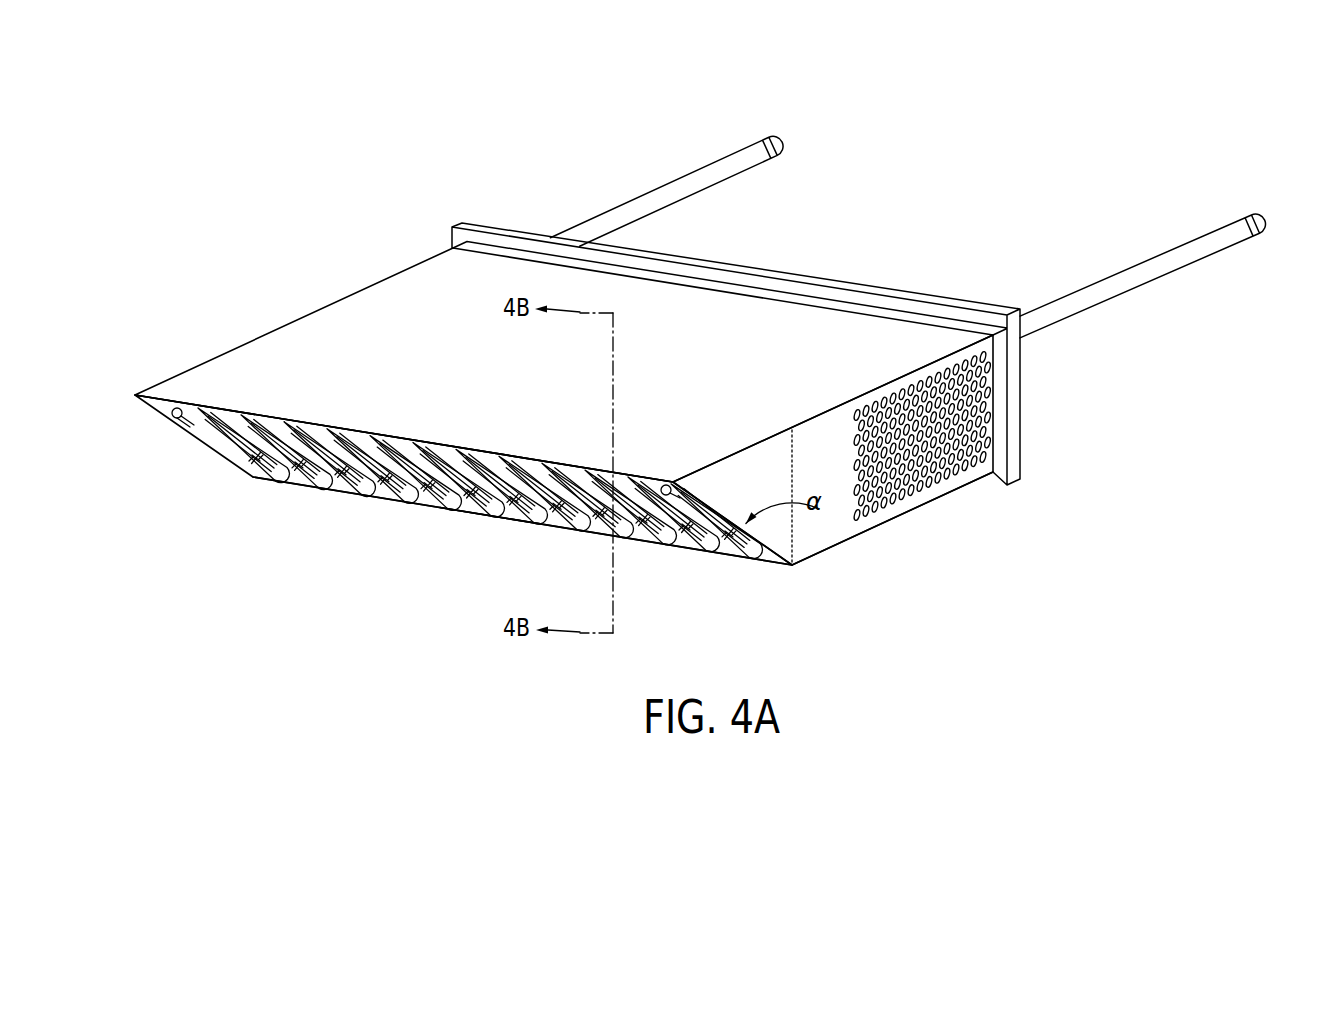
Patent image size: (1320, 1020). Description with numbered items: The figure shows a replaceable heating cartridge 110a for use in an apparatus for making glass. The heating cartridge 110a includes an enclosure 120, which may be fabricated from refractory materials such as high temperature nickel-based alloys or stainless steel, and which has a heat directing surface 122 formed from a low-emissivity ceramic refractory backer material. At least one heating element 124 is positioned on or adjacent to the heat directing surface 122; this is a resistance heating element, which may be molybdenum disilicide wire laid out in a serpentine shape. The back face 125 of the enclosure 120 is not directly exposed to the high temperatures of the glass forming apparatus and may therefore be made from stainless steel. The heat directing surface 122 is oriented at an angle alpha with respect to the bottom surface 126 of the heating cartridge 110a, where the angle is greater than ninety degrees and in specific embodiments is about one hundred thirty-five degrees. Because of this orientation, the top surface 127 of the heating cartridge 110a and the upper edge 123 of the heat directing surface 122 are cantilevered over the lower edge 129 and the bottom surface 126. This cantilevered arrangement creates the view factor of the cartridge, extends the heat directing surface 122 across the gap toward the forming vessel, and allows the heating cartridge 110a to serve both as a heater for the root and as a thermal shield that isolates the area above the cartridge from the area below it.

The heating cartridge 110a is at (322, 594).
The enclosure 120 is at (934, 540).
The heat directing surface 122 is at (281, 487).
The upper edge 123 is at (234, 404).
The heating element 124 is at (487, 508).
The back face 125 is at (1045, 404).
The bottom surface 126 is at (833, 562).
The top surface 127 is at (856, 336).
The lower edge 129 is at (427, 508).